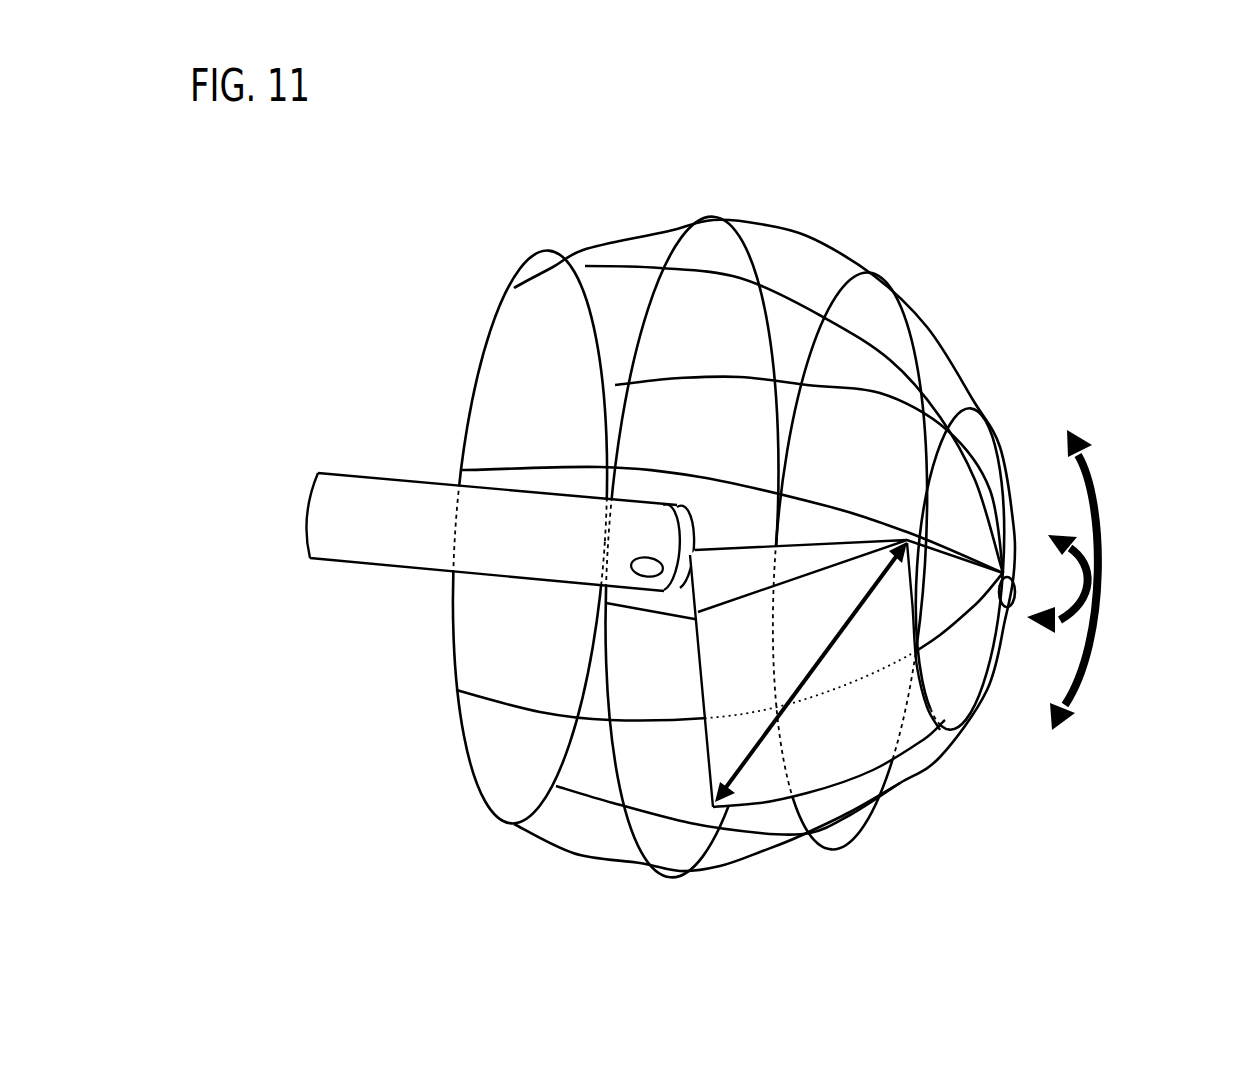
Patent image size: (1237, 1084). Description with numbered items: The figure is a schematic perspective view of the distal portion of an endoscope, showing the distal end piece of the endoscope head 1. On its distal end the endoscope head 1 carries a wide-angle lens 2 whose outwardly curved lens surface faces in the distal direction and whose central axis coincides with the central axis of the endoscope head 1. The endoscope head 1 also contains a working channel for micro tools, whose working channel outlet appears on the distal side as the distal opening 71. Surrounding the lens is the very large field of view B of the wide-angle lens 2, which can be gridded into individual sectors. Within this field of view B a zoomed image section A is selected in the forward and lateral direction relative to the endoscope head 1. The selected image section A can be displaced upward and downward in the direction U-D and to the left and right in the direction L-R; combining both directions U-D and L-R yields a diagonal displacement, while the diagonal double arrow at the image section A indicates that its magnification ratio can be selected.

The endoscope head 1 is at (403, 542).
The wide-angle lens 2 is at (680, 533).
The distal opening 71 is at (646, 576).
The image section A is at (826, 682).
The field of view B is at (833, 253).
The direction U-D is at (1112, 514).
The direction L-R is at (1063, 639).